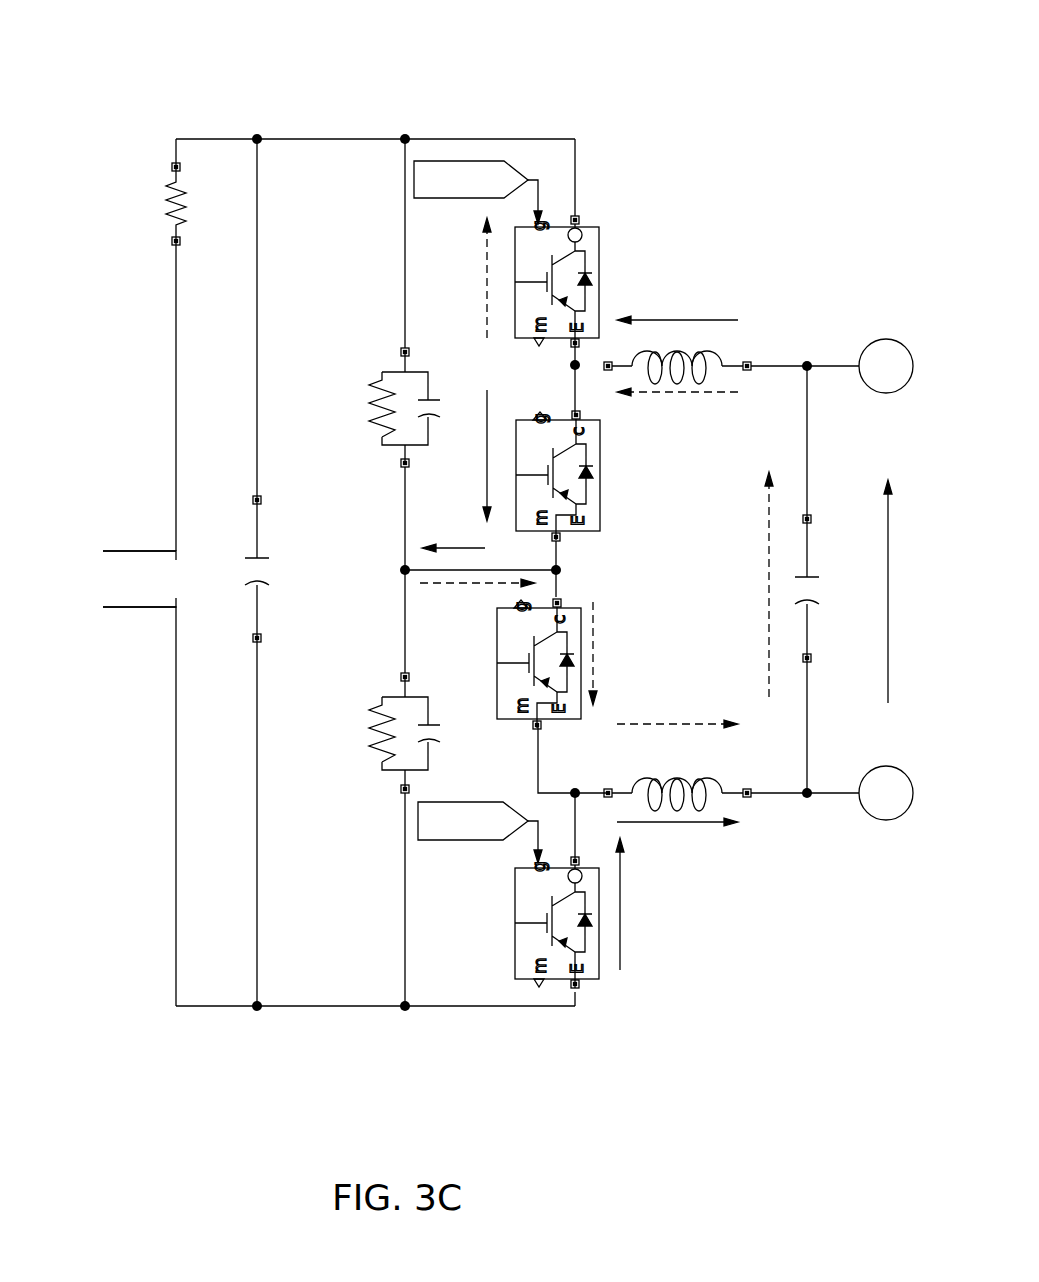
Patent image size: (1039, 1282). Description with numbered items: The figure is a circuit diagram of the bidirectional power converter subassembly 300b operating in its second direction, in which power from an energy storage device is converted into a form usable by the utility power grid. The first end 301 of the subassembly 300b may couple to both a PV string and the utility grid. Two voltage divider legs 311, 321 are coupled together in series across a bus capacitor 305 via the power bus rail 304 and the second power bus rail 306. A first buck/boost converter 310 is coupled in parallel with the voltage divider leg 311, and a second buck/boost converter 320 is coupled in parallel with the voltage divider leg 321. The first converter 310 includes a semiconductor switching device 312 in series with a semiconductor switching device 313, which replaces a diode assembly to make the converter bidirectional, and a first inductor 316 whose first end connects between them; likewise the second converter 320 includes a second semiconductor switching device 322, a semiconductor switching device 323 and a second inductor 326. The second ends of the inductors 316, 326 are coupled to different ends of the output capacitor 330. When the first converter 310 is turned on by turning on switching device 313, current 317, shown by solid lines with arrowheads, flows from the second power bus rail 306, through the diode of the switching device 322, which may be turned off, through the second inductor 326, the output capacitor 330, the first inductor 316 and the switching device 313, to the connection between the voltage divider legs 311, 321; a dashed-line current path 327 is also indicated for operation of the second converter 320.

The bidirectional power converter subassembly 300b is at (772, 86).
The first end 301 is at (128, 524).
The power bus rail 304 is at (325, 137).
The bus capacitor 305 is at (258, 583).
The second power bus rail 306 is at (325, 1010).
The first buck/boost converter 310 is at (610, 374).
The voltage divider leg 311 is at (355, 391).
The semiconductor switching device 312 is at (595, 226).
The semiconductor switching device 313 is at (600, 452).
The first inductor 316 is at (723, 362).
The current 317 is at (887, 622).
The second buck/boost converter 320 is at (604, 796).
The voltage divider leg 321 is at (355, 714).
The second semiconductor switching device 322 is at (600, 975).
The semiconductor switching device 323 is at (497, 645).
The second inductor 326 is at (722, 782).
The output voltage arrow 327 is at (768, 540).
The output capacitor 330 is at (815, 575).